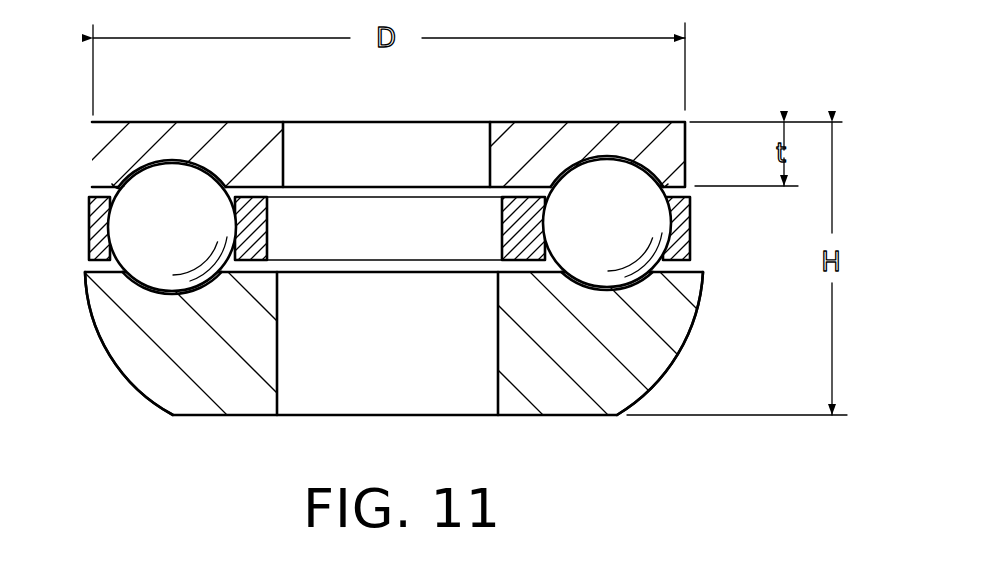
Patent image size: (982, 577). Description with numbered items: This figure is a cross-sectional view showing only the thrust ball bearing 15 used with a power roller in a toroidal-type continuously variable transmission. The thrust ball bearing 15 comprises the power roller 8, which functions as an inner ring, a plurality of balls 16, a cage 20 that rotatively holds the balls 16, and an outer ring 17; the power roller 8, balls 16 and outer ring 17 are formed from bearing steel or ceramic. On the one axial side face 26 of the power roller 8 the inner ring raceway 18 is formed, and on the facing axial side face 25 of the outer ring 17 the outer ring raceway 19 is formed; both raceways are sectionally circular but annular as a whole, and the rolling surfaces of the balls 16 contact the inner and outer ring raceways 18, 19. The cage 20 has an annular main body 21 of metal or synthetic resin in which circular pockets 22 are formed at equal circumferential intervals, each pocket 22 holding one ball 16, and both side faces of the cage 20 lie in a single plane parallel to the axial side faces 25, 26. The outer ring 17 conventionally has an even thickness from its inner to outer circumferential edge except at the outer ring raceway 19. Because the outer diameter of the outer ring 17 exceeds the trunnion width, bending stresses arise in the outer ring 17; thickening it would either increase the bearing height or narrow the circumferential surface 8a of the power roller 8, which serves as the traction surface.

The power roller 8 is at (407, 343).
The circumferential surface 8a is at (663, 378).
The thrust ball bearing 15 is at (407, 241).
The balls 16 is at (185, 195).
The outer ring 17 is at (645, 137).
The inner ring raceway 18 is at (690, 300).
The outer ring raceway 19 is at (600, 168).
The cage 20 is at (396, 231).
The annular main body 21 is at (692, 215).
The pockets 22 is at (118, 187).
The one axial side face 25 is at (293, 203).
The one axial side face 26 is at (262, 248).